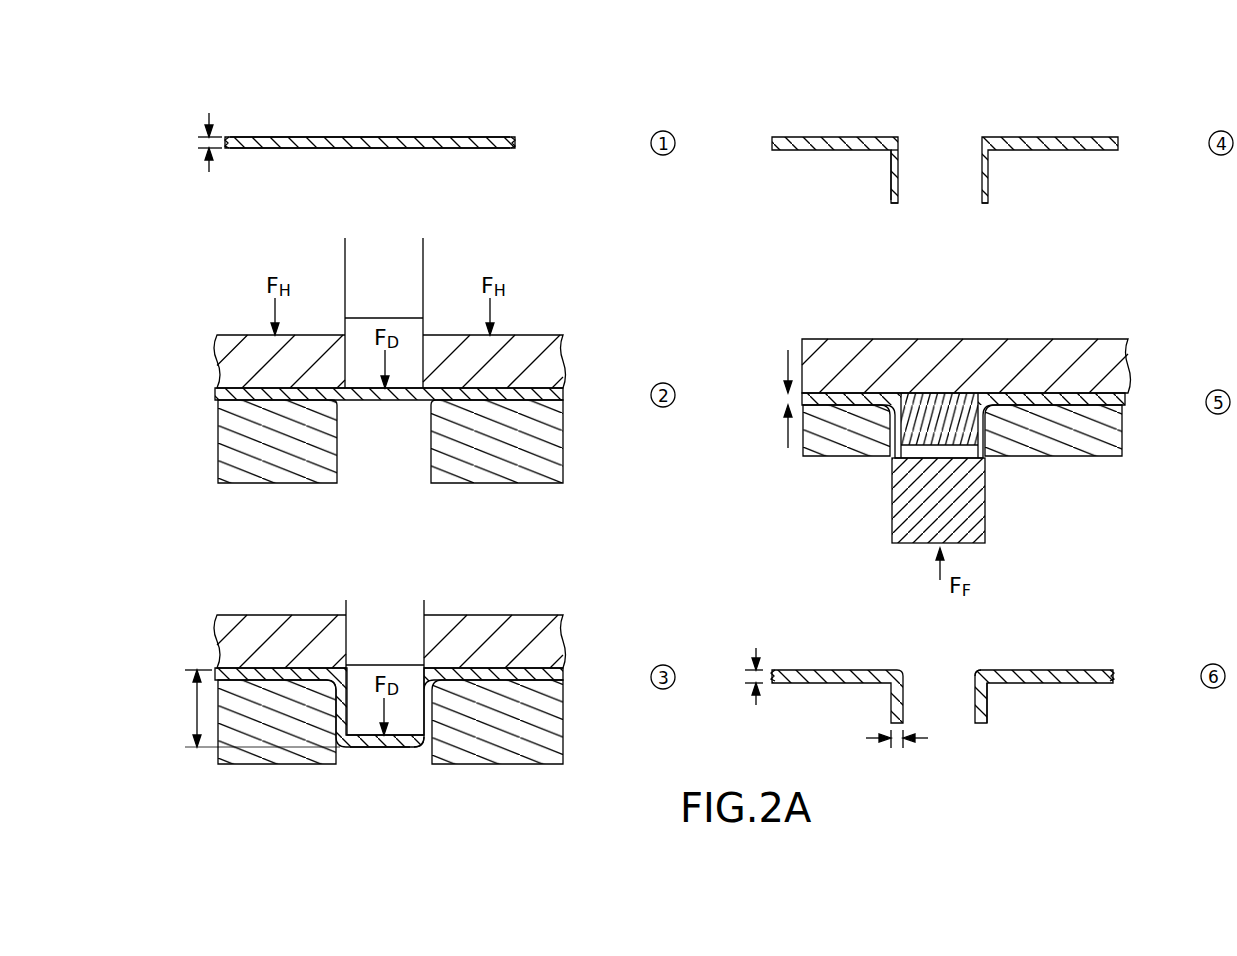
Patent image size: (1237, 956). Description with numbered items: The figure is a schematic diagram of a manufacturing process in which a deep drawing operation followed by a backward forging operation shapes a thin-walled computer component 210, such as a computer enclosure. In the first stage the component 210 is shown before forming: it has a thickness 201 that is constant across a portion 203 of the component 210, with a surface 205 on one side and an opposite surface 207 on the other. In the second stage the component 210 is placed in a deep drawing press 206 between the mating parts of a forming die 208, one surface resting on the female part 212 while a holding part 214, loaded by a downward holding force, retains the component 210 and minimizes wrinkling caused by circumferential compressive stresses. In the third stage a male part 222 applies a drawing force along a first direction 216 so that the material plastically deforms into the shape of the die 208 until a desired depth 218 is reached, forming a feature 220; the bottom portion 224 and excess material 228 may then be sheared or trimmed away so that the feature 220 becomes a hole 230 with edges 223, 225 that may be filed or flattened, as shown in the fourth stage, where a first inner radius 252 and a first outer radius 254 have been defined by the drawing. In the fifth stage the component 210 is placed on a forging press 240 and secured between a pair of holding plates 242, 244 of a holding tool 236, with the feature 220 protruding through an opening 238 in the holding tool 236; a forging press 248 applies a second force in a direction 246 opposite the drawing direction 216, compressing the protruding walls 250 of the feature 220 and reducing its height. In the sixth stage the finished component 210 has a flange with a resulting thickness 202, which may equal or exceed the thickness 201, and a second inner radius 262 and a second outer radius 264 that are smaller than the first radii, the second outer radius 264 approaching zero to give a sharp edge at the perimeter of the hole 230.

The thickness 201 is at (200, 142).
The resulting thickness 202 is at (897, 748).
The portion 203 is at (482, 117).
The surface 205 is at (262, 137).
The deep drawing press 206 is at (469, 266).
The bottom surface of sheet 207 is at (262, 148).
The forming die 208 is at (209, 416).
The component 210 is at (516, 139).
The female part 212 is at (564, 457).
The holding part 214 is at (527, 336).
The first direction 216 is at (383, 357).
The desired depth 218 is at (197, 713).
The feature 220 is at (960, 143).
The male part 222 is at (400, 318).
The edge 223 is at (990, 202).
The bottom portion 224 is at (375, 749).
The edge 225 is at (892, 202).
The excess material 228 is at (403, 749).
The hole 230 is at (937, 189).
The holding tool 236 is at (762, 390).
The opening 238 is at (858, 471).
The forging press 240 is at (1122, 486).
The holding plate 242 is at (1126, 360).
The holding plate 244 is at (1119, 432).
The direction 246 is at (938, 581).
The forging press 248 is at (985, 493).
The walls 250 is at (985, 453).
The first inner radius 252 is at (891, 152).
The first outer radius 254 is at (897, 137).
The second inner radius 262 is at (987, 686).
The second outer radius 264 is at (980, 674).